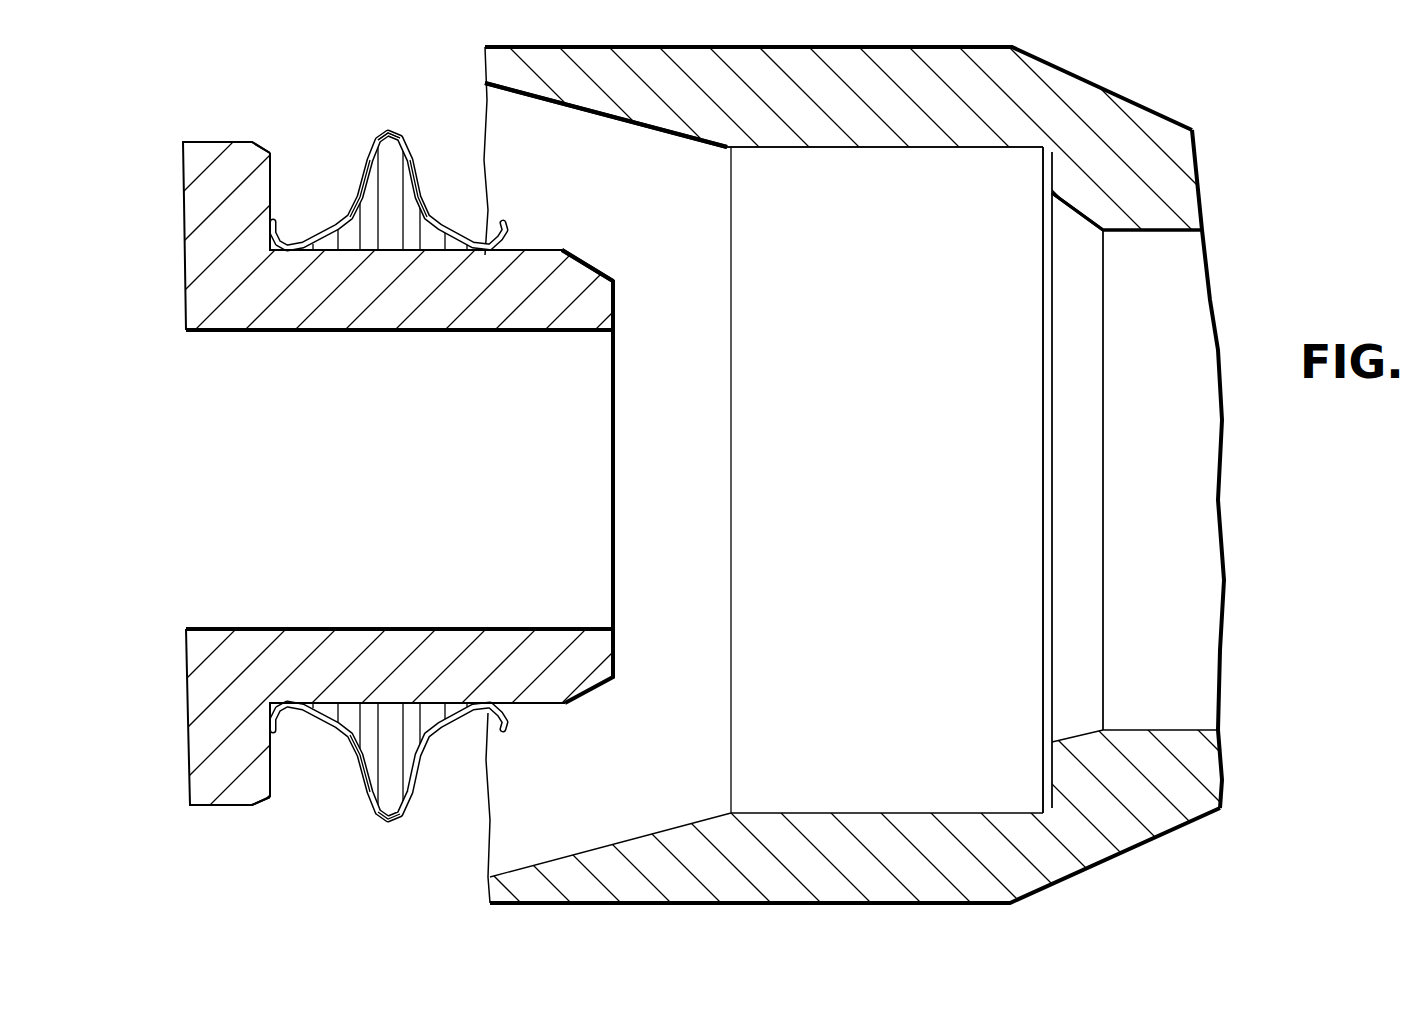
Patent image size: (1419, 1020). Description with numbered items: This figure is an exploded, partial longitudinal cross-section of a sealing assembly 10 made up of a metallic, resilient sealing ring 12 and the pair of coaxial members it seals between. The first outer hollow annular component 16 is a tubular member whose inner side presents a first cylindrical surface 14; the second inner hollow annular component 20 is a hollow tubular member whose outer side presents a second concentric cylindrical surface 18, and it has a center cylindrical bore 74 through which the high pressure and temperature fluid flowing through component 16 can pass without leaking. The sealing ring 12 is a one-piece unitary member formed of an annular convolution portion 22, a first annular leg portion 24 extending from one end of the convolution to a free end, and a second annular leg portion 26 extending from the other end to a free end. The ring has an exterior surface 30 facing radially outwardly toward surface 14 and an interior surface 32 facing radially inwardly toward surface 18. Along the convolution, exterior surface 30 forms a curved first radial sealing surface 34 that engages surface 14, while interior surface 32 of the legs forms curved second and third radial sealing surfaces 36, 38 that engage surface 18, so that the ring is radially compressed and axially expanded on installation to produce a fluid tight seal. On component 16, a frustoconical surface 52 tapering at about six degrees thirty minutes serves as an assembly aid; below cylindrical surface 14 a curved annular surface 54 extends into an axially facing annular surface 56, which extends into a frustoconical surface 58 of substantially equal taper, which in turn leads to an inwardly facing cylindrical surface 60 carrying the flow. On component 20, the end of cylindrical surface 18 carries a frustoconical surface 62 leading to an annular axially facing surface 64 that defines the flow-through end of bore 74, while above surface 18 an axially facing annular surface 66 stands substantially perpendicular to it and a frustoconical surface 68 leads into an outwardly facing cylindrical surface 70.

The sealing assembly 10 is at (1244, 88).
The sealing ring 12 is at (330, 145).
The first cylindrical surface 14 is at (877, 148).
The first outer hollow annular body 16 is at (1098, 85).
The second concentric cylindrical surface 18 is at (709, 510).
The second inner hollow annular body 20 is at (221, 474).
The annular convolution portion 22 is at (377, 127).
The first annular leg portion 24 is at (350, 159).
The second annular leg portion 26 is at (430, 164).
The exterior surface 30 is at (364, 785).
The interior surface 32 is at (386, 823).
The first radial sealing surface 34 is at (392, 131).
The second radial sealing surface 36 is at (285, 252).
The third radial sealing surface 38 is at (487, 252).
The frustoconical surface 52 is at (574, 107).
The curved annular surface 54 is at (1043, 160).
The axially facing annular surface 56 is at (1050, 210).
The frustoconical surface 58 is at (1097, 232).
The inwardly facing cylindrical surface 60 is at (1183, 232).
The frustoconical surface 62 is at (598, 268).
The annular axially facing surface 64 is at (616, 300).
The axially facing annular surface 66 is at (271, 207).
The frustoconical surface 68 is at (264, 150).
The outwardly facing cylindrical surface 70 is at (197, 142).
The center cylindrical bore 74 is at (395, 332).